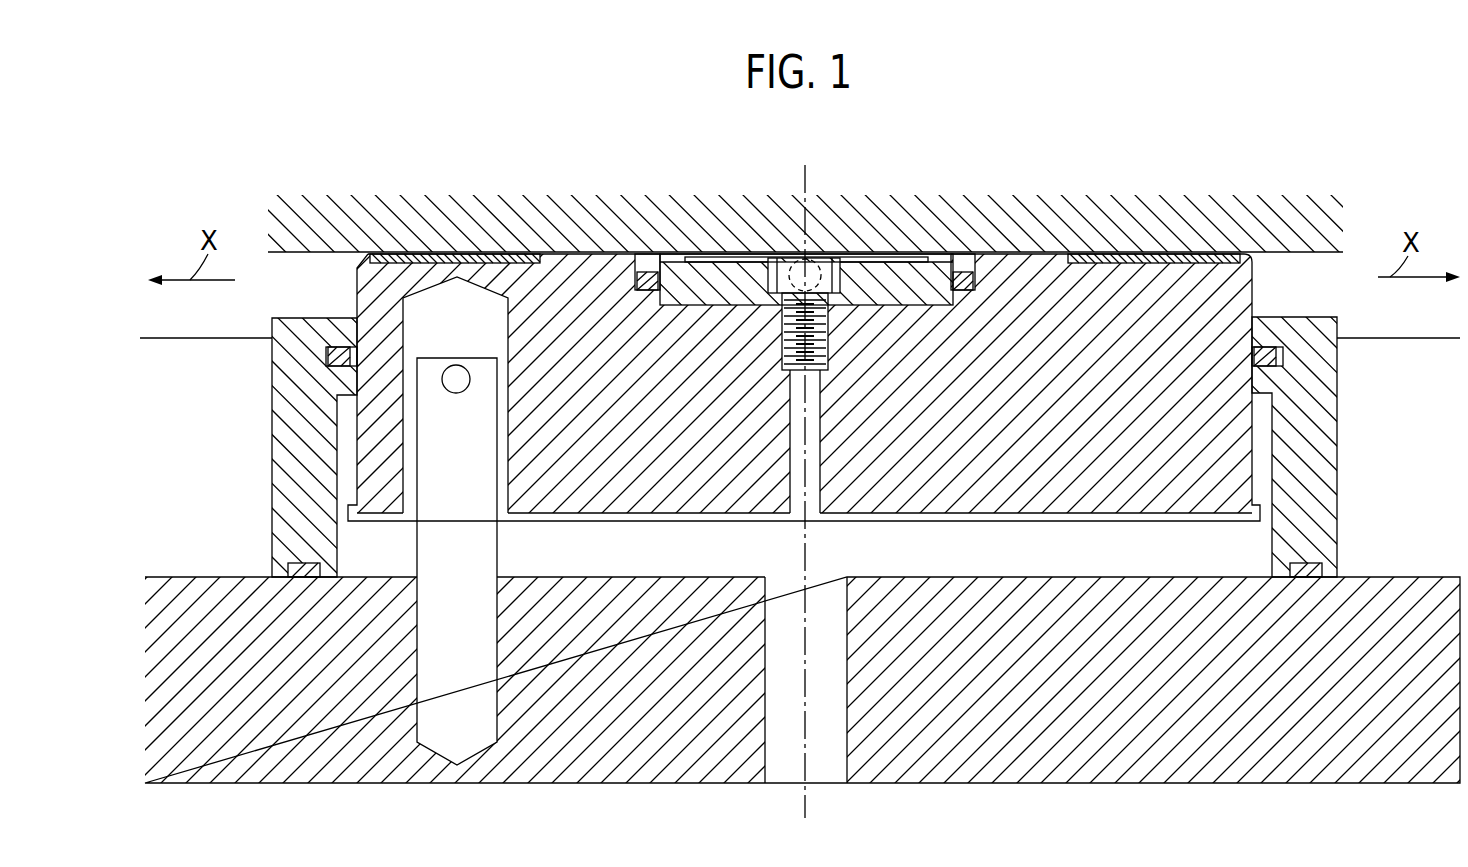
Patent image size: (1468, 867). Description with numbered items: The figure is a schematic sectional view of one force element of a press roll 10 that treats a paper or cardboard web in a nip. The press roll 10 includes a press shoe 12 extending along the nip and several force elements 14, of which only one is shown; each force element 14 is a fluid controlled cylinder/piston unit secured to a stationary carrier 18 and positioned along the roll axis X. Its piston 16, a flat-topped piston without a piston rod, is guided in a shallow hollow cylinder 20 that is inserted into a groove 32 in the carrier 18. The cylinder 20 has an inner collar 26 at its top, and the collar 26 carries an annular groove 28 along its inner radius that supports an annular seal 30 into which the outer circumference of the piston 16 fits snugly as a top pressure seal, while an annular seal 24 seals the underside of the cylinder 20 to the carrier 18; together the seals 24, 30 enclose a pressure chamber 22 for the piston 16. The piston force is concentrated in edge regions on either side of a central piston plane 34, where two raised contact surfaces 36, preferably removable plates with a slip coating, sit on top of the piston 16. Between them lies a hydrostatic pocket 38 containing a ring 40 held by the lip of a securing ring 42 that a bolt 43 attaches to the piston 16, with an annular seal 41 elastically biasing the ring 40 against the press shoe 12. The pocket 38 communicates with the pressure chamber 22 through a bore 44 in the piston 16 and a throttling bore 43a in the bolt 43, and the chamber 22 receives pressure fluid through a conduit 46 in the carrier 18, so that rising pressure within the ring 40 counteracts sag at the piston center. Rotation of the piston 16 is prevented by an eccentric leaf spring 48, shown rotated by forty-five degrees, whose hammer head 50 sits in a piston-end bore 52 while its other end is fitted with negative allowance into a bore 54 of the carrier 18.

The press roll 10 is at (1040, 150).
The press shoe 12 is at (548, 204).
The force element 14 is at (300, 288).
The piston 16 is at (1240, 296).
The stationary carrier 18 is at (1055, 768).
The cylinder 20 is at (293, 420).
The pressure chamber 22 is at (375, 563).
The annular seal 24 is at (290, 568).
The inner collar 26 is at (1305, 322).
The annular groove 28 is at (1262, 362).
The annular seal 30 is at (1283, 358).
The groove 32 is at (188, 360).
The central piston plane 34 is at (806, 165).
The contact surface 36 is at (430, 260).
The hydrostatic pocket 38 is at (885, 258).
The ring 40 is at (650, 260).
The annular seal 41 is at (636, 260).
The securing ring 42 is at (735, 262).
The bolt 43 is at (832, 262).
The bore 43a is at (795, 250).
The bore 44 is at (820, 452).
The conduit 46 is at (832, 772).
The leaf spring 48 is at (485, 452).
The hammer head 50 is at (460, 381).
The piston-end bore 52 is at (500, 330).
The bore 54 is at (500, 595).